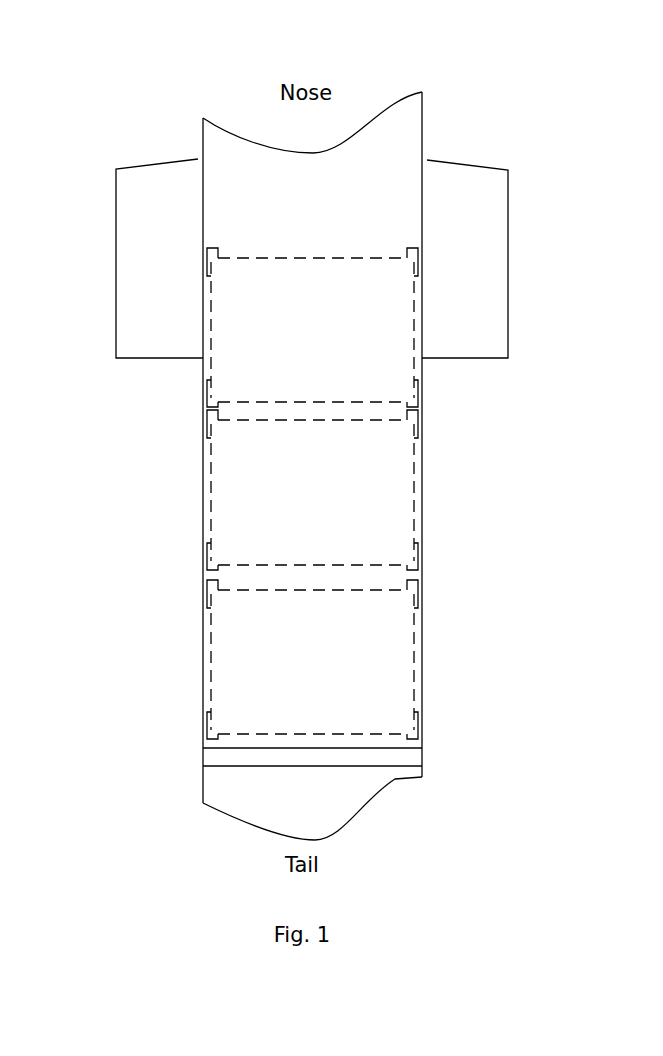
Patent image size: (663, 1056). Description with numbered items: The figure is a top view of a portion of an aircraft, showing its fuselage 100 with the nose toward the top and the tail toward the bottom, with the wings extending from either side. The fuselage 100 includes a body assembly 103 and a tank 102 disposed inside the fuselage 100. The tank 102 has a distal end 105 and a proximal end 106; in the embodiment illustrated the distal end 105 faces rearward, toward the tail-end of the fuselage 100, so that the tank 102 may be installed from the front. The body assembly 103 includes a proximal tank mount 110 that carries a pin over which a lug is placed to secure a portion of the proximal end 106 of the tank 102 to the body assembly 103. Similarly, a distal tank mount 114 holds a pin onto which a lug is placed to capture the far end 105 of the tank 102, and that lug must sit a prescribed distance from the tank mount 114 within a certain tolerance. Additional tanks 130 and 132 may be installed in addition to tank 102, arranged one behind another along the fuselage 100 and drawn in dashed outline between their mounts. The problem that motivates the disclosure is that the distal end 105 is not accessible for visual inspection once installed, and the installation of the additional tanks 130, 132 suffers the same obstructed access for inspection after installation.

The fuselage 100 is at (270, 466).
The tank 102 is at (413, 665).
The body assembly 103 is at (202, 700).
The distal end 105 is at (235, 737).
The proximal end 106 is at (237, 587).
The proximal tank mount 110 is at (418, 597).
The distal tank mount 114 is at (418, 730).
The additional tank 130 is at (413, 500).
The additional tank 132 is at (413, 338).